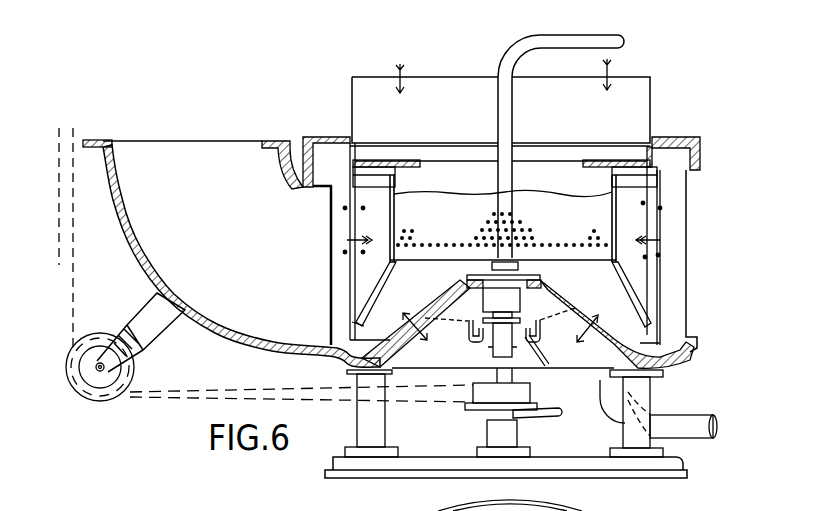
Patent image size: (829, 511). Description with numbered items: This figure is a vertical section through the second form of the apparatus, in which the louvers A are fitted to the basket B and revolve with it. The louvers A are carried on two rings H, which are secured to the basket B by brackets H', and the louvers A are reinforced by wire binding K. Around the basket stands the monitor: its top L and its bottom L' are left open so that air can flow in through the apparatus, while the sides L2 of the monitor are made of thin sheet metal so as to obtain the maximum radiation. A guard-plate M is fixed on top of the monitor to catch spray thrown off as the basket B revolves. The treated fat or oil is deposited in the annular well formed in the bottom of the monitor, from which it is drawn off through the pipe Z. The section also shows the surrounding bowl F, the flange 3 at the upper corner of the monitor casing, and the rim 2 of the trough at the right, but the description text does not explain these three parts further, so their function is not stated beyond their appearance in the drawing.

The bowl F is at (213, 197).
The louvers A is at (360, 212).
The wire binding K is at (366, 248).
The rings H is at (526, 239).
The brackets H' is at (502, 223).
The basket B is at (503, 218).
The top of the monitor L is at (503, 92).
The guard-plate M is at (651, 92).
The flange 3 is at (690, 141).
The sides of the monitor L2 is at (690, 256).
The bottom of the monitor L' is at (528, 324).
The trough rim 2 is at (700, 351).
The pipe Z is at (713, 413).